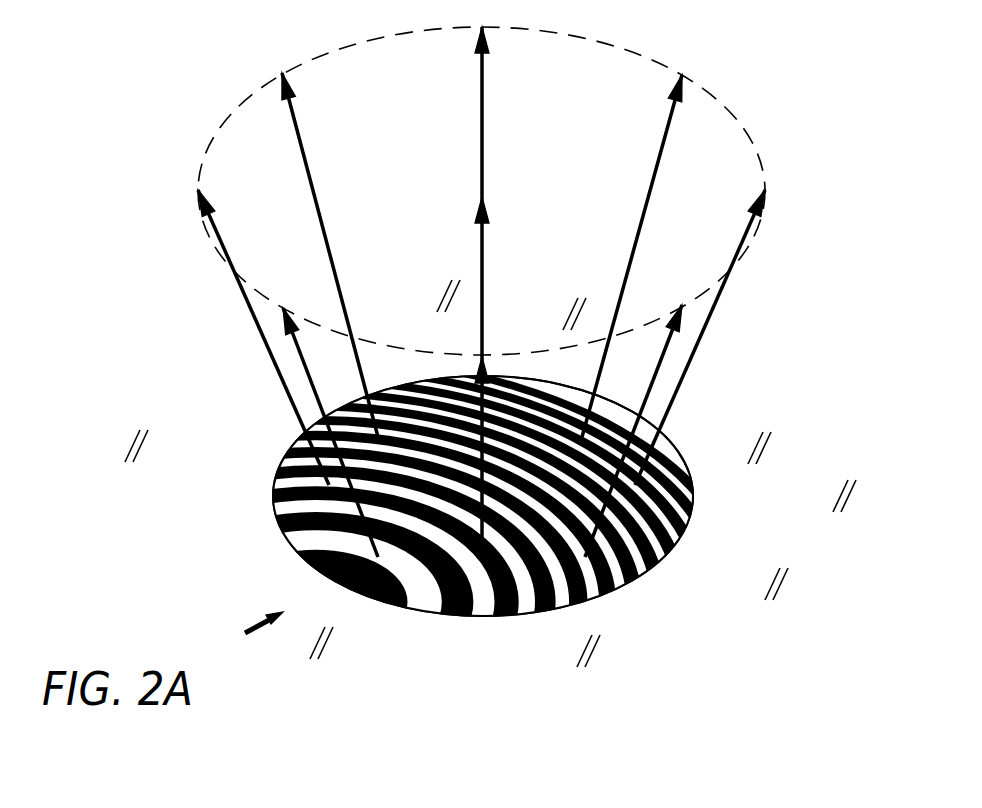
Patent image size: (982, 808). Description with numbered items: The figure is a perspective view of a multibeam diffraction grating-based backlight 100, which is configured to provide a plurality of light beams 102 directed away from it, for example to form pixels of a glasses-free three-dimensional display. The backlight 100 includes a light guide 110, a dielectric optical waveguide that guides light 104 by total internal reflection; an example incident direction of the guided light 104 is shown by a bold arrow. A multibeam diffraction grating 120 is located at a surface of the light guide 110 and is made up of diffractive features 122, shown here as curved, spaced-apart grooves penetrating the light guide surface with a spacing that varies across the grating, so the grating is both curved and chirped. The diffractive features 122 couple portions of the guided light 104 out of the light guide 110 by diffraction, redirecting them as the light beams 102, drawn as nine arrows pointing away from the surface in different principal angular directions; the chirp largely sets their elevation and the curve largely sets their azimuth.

The multibeam diffraction grating-based backlight 100 is at (786, 153).
The light beams 102 is at (298, 130).
The guided light 104 is at (262, 621).
The light guide 110 is at (778, 556).
The multibeam diffraction grating 120 is at (268, 436).
The diffractive features 122 is at (623, 577).